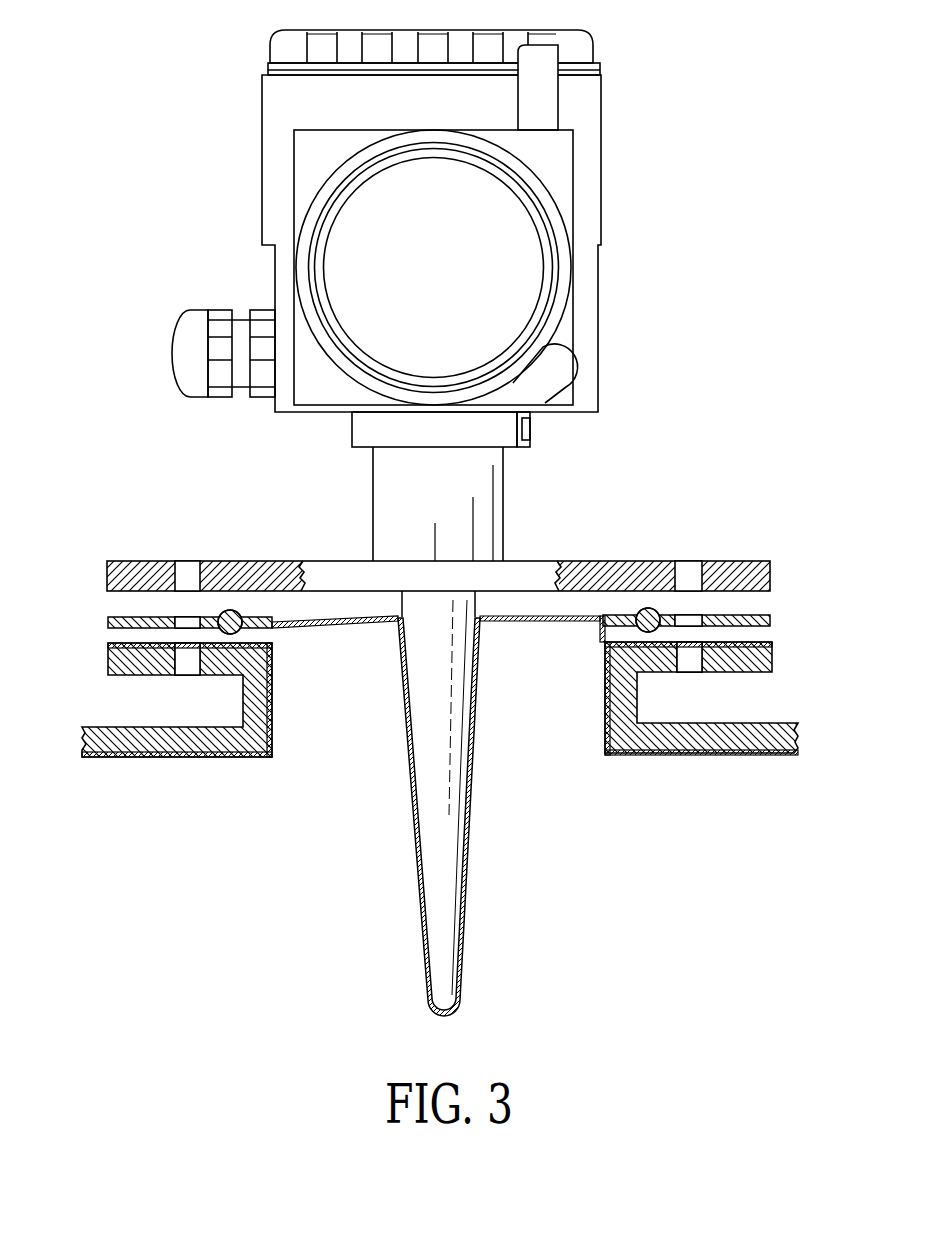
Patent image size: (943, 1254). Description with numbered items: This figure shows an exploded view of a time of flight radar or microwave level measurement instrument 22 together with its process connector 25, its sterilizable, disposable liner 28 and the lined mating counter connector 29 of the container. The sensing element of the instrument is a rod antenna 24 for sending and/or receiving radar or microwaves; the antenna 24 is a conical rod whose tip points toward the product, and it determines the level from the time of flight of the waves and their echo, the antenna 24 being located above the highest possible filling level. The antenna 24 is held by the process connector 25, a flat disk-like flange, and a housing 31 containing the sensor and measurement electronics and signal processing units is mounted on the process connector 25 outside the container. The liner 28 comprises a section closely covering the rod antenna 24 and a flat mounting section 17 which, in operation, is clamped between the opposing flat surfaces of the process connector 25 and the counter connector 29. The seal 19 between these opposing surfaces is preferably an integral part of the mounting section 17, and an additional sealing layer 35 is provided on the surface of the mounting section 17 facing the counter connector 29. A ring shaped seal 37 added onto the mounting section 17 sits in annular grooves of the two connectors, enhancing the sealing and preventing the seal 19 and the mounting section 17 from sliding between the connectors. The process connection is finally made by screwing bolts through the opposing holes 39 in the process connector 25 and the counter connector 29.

The flat mounting section 17 is at (757, 607).
The seal 19 is at (598, 637).
The radar level sensor 22 is at (203, 447).
The rod antenna 24 is at (428, 860).
The process connector 25 is at (132, 570).
The liner 28 is at (468, 888).
The counter connector 29 is at (113, 661).
The housing 31 is at (277, 163).
The sealing layer 35 is at (108, 623).
The ring shaped seal 37 is at (648, 610).
The holes 39 is at (187, 568).